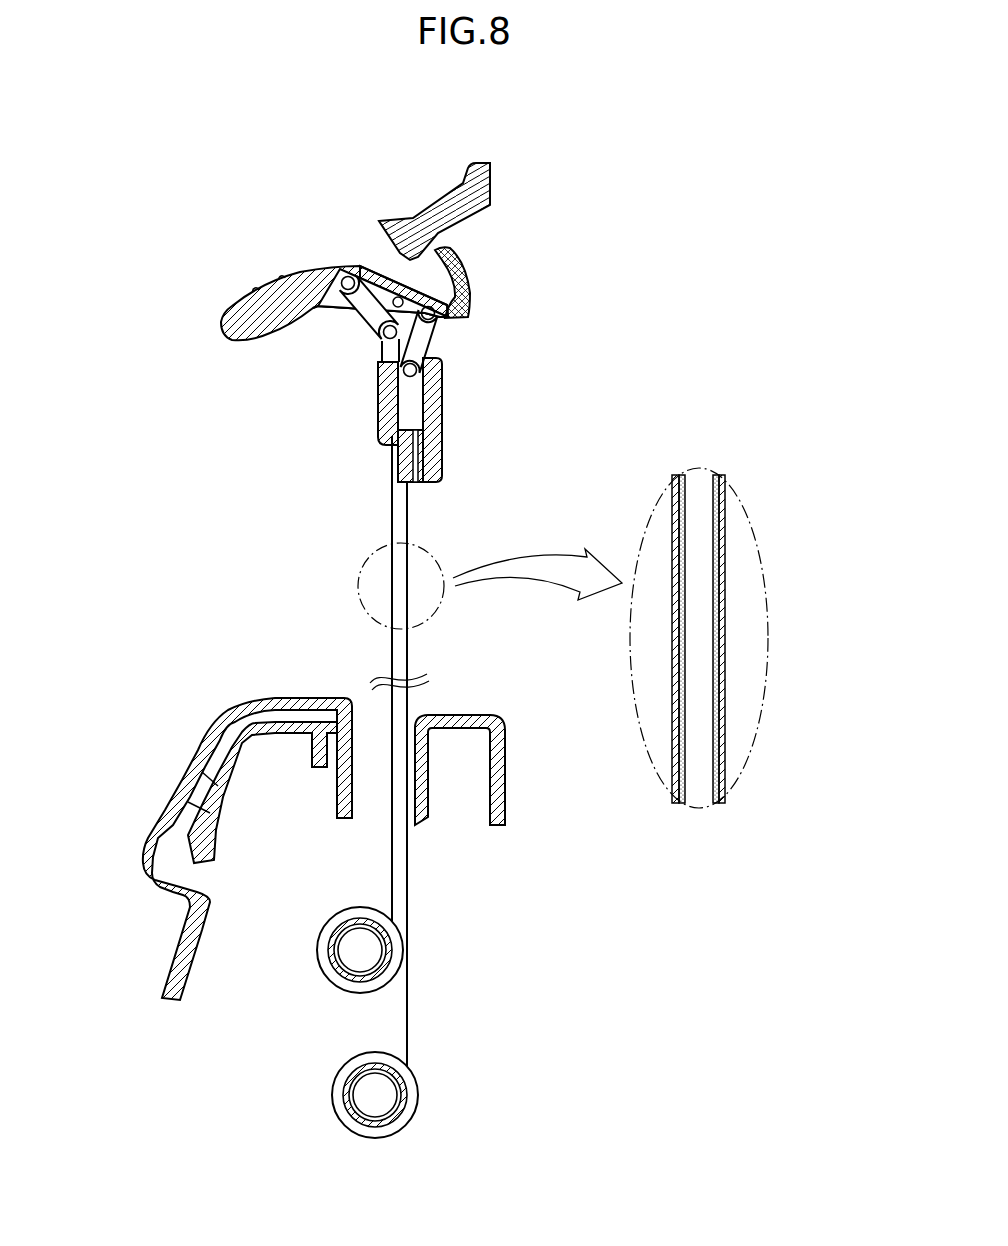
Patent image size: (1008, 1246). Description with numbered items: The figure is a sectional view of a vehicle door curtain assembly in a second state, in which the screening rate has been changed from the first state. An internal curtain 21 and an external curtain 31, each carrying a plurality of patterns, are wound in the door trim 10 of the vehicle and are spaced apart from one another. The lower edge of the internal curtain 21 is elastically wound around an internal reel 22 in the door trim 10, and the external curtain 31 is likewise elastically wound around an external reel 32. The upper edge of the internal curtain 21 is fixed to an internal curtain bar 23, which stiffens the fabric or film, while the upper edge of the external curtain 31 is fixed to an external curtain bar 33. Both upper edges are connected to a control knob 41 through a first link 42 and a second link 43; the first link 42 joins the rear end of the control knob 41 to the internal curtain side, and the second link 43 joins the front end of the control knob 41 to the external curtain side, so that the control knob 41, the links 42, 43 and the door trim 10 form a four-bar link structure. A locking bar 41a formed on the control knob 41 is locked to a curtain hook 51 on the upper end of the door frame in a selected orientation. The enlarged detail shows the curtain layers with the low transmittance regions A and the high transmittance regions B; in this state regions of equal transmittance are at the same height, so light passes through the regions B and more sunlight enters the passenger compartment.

The door trim 10 is at (188, 753).
The internal curtain 21 is at (392, 853).
The internal reel 22 is at (345, 958).
The internal curtain bar 23 is at (388, 396).
The external curtain 31 is at (409, 1012).
The external reel 32 is at (340, 1107).
The external curtain bar 33 is at (437, 404).
The control knob 41 is at (282, 292).
The locking bar 41a is at (397, 297).
The first link 42 is at (367, 310).
The second link 43 is at (420, 342).
The curtain hook 51 is at (471, 266).
The low transmittance region A is at (678, 557).
The high transmittance region B is at (672, 648).